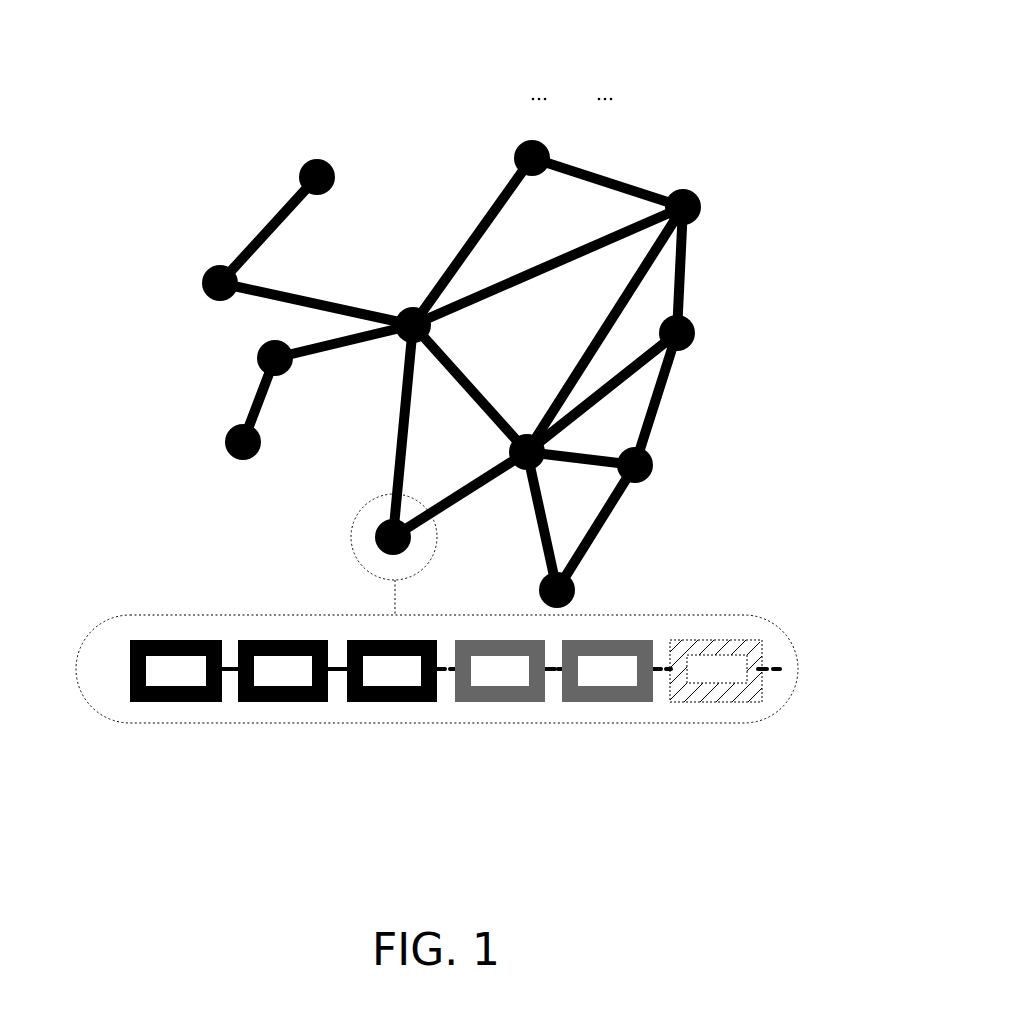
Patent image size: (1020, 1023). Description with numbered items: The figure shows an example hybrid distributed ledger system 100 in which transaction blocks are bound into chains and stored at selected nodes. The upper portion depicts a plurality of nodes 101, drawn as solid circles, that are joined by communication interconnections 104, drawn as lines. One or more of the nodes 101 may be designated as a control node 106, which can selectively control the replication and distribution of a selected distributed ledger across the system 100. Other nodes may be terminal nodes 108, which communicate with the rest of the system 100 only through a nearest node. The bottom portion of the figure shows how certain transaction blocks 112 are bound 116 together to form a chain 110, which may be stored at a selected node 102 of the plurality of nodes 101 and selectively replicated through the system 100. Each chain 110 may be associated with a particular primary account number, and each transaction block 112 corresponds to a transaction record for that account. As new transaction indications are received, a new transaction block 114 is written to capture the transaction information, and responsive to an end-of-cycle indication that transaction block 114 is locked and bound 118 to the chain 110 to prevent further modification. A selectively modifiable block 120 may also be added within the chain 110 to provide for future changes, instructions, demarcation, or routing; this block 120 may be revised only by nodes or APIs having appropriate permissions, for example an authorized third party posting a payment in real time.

The hybrid distributed ledger system 100 is at (447, 68).
The nodes 101 is at (355, 172).
The selected node 102 is at (380, 543).
The communication interconnections 104 is at (400, 405).
The control node 106 is at (410, 300).
The terminal node 108 is at (313, 160).
The chain 110 is at (183, 613).
The transaction block 112 is at (177, 682).
The new transaction block 114 is at (508, 678).
The binding 116 is at (333, 672).
The binding of new transaction block 118 is at (443, 672).
The selectively modifiable block 120 is at (710, 673).